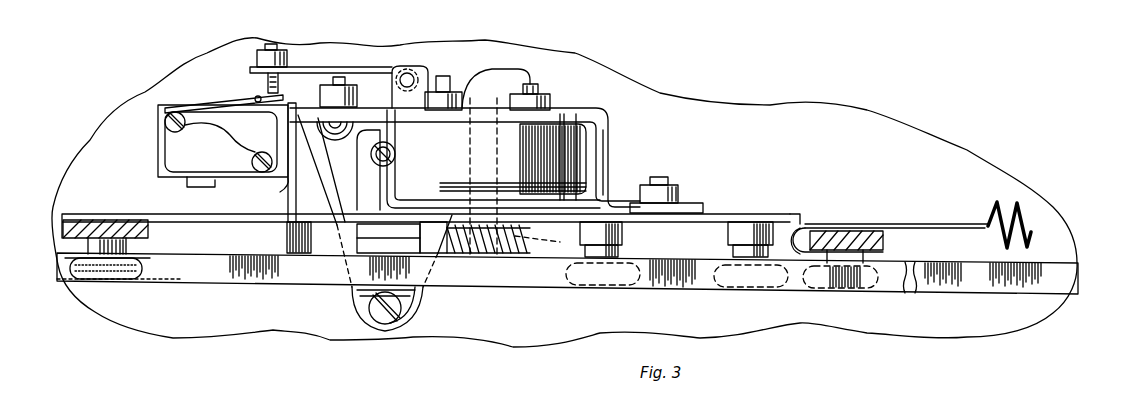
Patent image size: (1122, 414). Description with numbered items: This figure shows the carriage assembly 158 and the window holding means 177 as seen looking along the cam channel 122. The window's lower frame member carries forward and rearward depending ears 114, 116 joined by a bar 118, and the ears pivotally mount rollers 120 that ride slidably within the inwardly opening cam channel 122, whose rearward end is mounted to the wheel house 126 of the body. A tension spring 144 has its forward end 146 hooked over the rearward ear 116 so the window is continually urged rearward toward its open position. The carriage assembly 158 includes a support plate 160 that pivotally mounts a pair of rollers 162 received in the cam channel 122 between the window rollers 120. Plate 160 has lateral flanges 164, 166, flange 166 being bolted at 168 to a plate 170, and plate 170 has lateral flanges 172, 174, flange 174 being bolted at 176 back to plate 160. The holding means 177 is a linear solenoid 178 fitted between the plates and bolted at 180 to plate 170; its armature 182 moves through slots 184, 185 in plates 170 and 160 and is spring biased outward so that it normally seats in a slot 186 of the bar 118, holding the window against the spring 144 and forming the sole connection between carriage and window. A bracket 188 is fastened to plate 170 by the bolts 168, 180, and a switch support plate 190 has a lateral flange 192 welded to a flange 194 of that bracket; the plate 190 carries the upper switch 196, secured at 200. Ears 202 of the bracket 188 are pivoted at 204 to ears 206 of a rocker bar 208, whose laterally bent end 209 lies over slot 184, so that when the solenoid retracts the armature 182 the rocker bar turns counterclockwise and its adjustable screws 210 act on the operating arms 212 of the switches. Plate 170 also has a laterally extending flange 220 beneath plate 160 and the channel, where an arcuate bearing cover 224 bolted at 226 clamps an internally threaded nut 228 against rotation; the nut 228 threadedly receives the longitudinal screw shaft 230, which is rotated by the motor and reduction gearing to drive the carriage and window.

The forward depending ear 114 is at (95, 215).
The rearward depending ear 116 is at (884, 240).
The bar 118 is at (796, 225).
The rollers 120 is at (128, 280).
The cam channel 122 is at (530, 285).
The wheel house 126 is at (970, 152).
The tension spring 144 is at (1017, 212).
The forward end of tension spring 146 is at (822, 226).
The carriage assembly 158 is at (608, 114).
The support plate 160 is at (735, 215).
The rollers 162 is at (606, 278).
The lateral flange 164 is at (396, 165).
The lateral flange 166 is at (296, 158).
The bolt 168 is at (337, 78).
The plate 170 is at (562, 118).
The lateral flange 172 is at (610, 140).
The lateral flange 174 is at (700, 207).
The bolt 176 is at (661, 180).
The holding means 177 is at (577, 118).
The linear solenoid 178 is at (572, 162).
The bolt 180 is at (447, 80).
The armature 182 is at (481, 176).
The slot 184 is at (508, 100).
The slot 185 is at (506, 176).
The slot 186 is at (547, 244).
The bracket 188 is at (372, 108).
The switch support plate 190 is at (203, 141).
The lateral flange 192 is at (260, 174).
The flange 194 is at (290, 186).
The upper switch 196 is at (190, 183).
The switch fastening 200 is at (235, 132).
The ears 202 is at (419, 82).
The pivot 204 is at (407, 73).
The ears 206 is at (440, 78).
The rocker bar 208 is at (305, 67).
The laterally bent end 209 is at (492, 69).
The adjustable screws 210 is at (272, 50).
The operating arms 212 is at (213, 105).
The laterally extending flange 220 is at (342, 178).
The arcuate bearing cover 224 is at (362, 300).
The bolt 226 is at (402, 310).
The internally threaded nut 228 is at (340, 246).
The screw shaft 230 is at (486, 250).